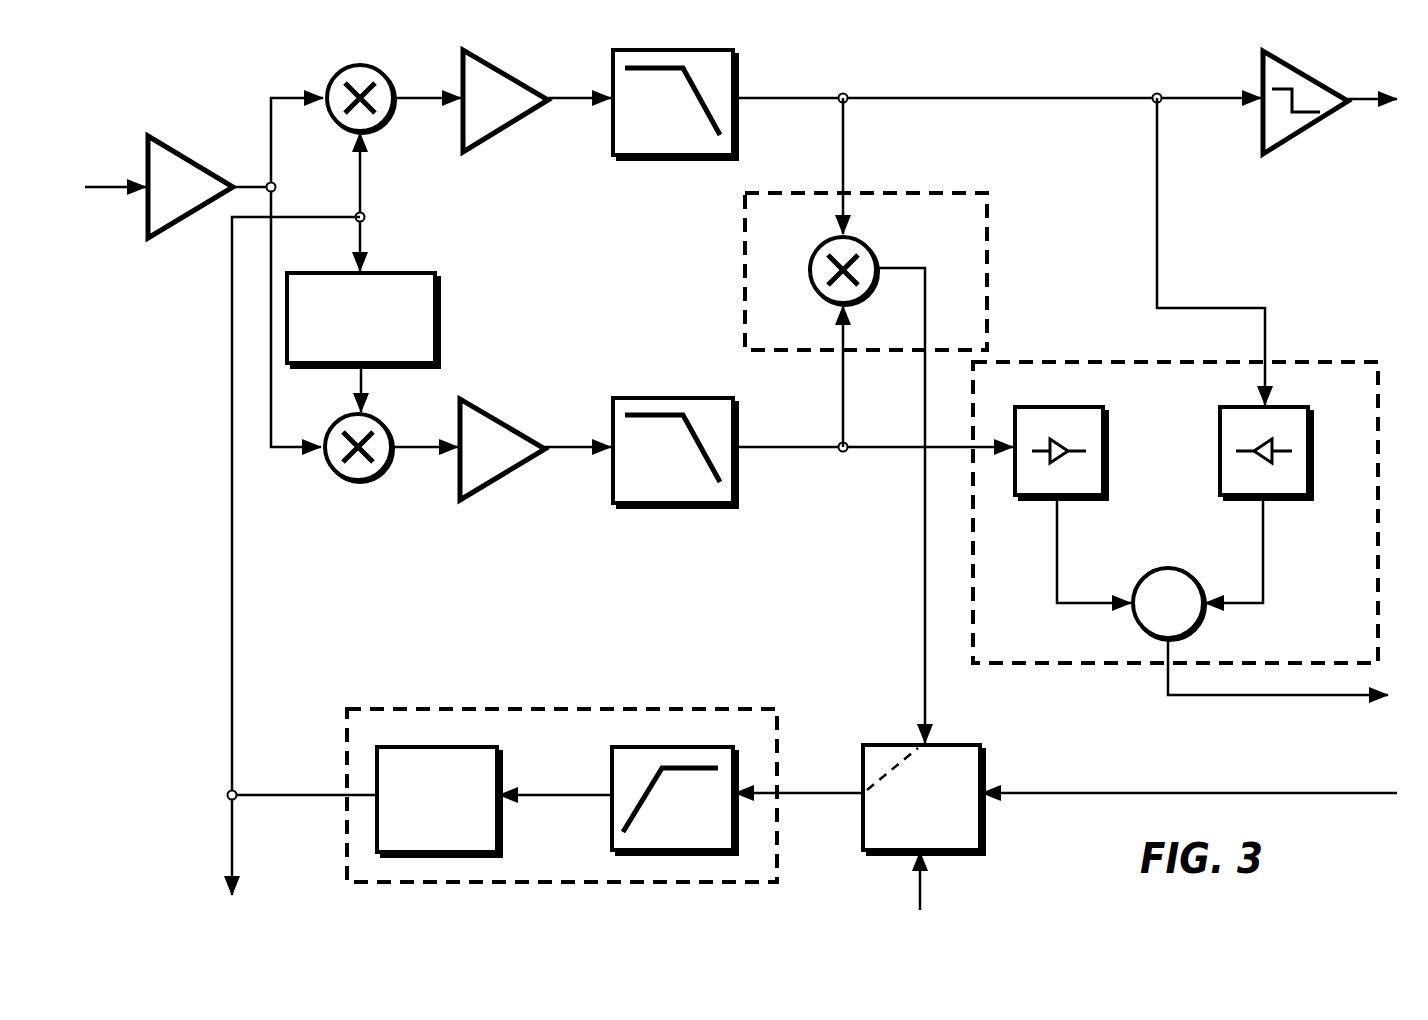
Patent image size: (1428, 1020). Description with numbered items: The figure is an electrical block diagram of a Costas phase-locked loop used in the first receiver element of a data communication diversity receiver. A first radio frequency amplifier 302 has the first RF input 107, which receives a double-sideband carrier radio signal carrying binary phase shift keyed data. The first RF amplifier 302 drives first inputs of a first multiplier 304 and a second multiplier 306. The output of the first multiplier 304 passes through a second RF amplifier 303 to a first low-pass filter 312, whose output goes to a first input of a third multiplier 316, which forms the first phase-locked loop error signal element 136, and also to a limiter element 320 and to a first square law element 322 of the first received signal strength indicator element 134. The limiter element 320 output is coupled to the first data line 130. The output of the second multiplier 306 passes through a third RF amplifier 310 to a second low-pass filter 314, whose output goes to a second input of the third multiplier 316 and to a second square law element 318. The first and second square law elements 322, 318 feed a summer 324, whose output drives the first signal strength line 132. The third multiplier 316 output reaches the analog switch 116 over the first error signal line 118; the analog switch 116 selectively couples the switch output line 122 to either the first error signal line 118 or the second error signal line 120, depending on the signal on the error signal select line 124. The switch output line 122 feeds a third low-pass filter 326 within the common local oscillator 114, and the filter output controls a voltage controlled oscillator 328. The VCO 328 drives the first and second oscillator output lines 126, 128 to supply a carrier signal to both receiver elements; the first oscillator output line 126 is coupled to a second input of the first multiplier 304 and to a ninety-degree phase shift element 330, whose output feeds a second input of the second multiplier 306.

The first RF input 107 is at (140, 193).
The first radio frequency amplifier 302 is at (168, 146).
The second RF amplifier 303 is at (510, 137).
The first multiplier 304 is at (388, 130).
The second multiplier 306 is at (372, 417).
The third RF amplifier 310 is at (497, 417).
The first low-pass filter 312 is at (737, 72).
The second low-pass filter 314 is at (645, 398).
The third multiplier 316 is at (865, 243).
The second square law element 318 is at (1042, 407).
The limiter element 320 is at (1310, 130).
The first square law element 322 is at (1283, 407).
The summer 324 is at (1168, 568).
The third low-pass filter 326 is at (612, 810).
The voltage controlled oscillator 328 is at (500, 775).
The ninety-degree phase shift element 330 is at (388, 272).
The common local oscillator 114 is at (535, 708).
The analog switch 116 is at (950, 745).
The first error signal line 118 is at (920, 535).
The second error signal line 120 is at (920, 905).
The switch output line 122 is at (793, 792).
The error signal select line 124 is at (1135, 793).
The first oscillator output line 126 is at (232, 695).
The second oscillator output line 128 is at (230, 840).
The first data line 130 is at (1358, 100).
The first signal strength line 132 is at (1290, 697).
The first received signal strength indicator element 134 is at (1300, 360).
The first phase-locked loop error signal element 136 is at (902, 193).